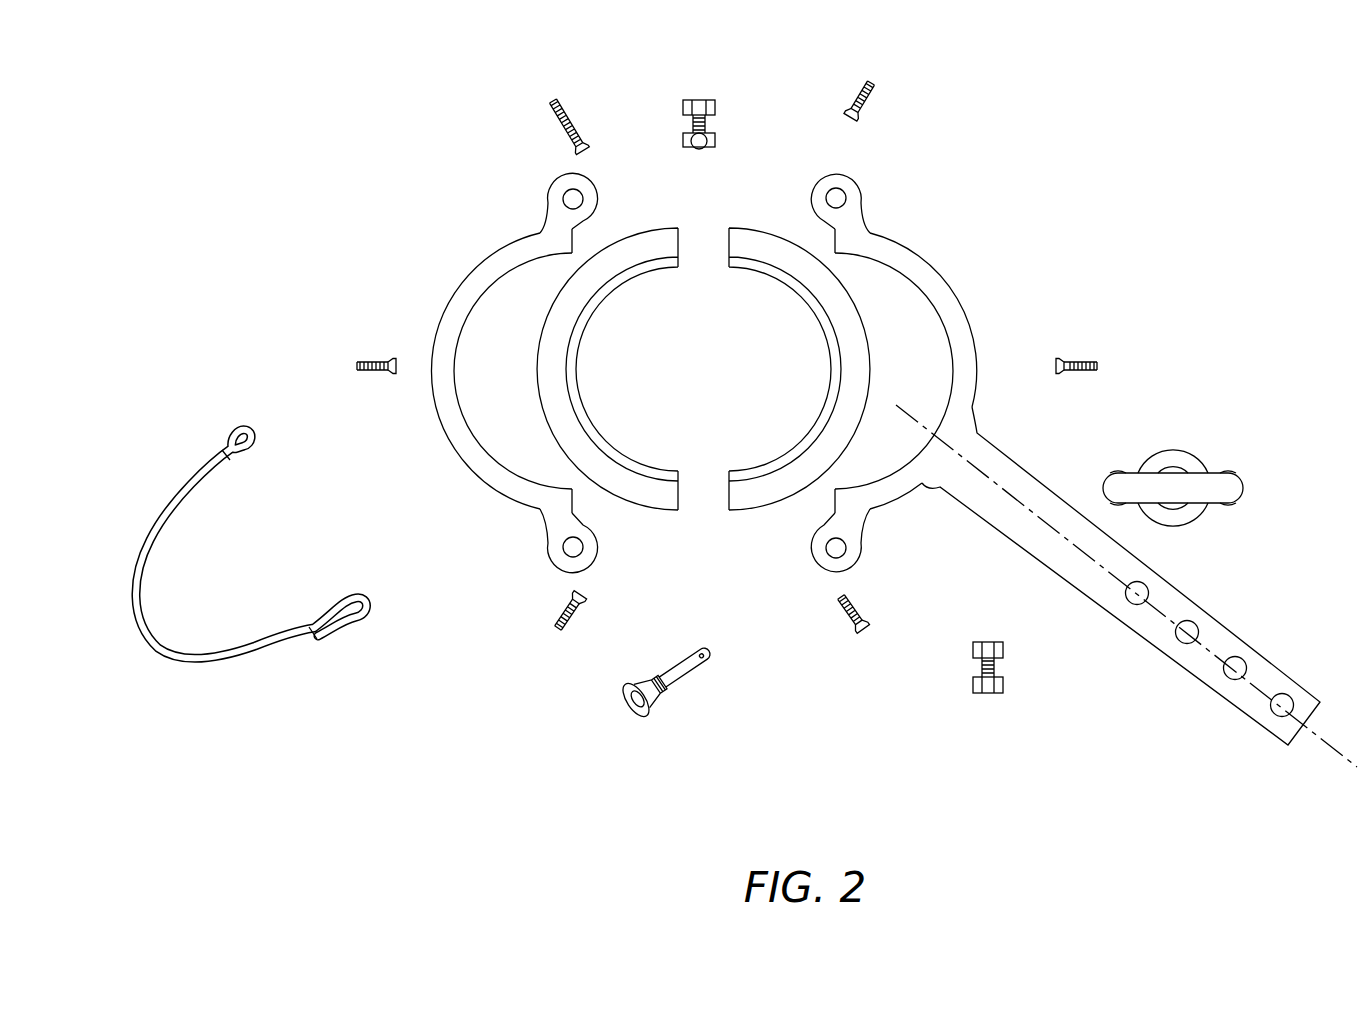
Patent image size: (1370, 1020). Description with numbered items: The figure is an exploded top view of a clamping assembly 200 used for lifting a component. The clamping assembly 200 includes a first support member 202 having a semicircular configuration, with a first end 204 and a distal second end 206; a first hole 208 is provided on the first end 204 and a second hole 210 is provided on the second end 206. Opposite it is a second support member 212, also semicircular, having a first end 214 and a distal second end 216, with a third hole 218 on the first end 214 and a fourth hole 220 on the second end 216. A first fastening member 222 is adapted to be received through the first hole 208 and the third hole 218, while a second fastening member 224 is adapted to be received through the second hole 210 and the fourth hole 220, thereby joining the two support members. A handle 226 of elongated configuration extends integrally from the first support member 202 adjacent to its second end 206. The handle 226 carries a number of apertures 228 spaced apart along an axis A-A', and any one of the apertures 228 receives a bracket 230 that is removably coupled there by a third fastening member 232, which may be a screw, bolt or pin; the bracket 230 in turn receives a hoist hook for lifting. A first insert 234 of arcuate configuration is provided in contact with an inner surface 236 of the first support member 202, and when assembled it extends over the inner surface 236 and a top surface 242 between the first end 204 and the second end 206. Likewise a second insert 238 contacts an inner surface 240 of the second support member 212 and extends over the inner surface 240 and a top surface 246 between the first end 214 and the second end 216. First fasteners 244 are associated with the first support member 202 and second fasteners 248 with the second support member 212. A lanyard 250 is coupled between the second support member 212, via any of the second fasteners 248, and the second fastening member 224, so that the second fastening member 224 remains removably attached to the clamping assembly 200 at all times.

The clamping assembly 200 is at (1195, 125).
The first support member 202 is at (958, 292).
The first end 204 is at (885, 216).
The second end 206 is at (880, 527).
The first hole 208 is at (838, 197).
The second hole 210 is at (835, 548).
The second support member 212 is at (440, 325).
The first end 214 is at (520, 214).
The second end 216 is at (520, 525).
The third hole 218 is at (573, 199).
The fourth hole 220 is at (573, 548).
The first fastening member 222 is at (717, 106).
The second fastening member 224 is at (700, 668).
The handle 226 is at (1053, 478).
The apertures 228 is at (1226, 674).
The bracket 230 is at (1247, 490).
The third fastening member 232 is at (1004, 685).
The first insert 234 is at (757, 227).
The inner surface 236 is at (946, 328).
The second insert 238 is at (651, 224).
The inner surface 240 is at (457, 397).
The top surface 242 is at (935, 277).
The first fasteners 244 is at (874, 93).
The top surface 246 is at (475, 278).
The second fasteners 248 is at (566, 104).
The lanyard 250 is at (154, 533).